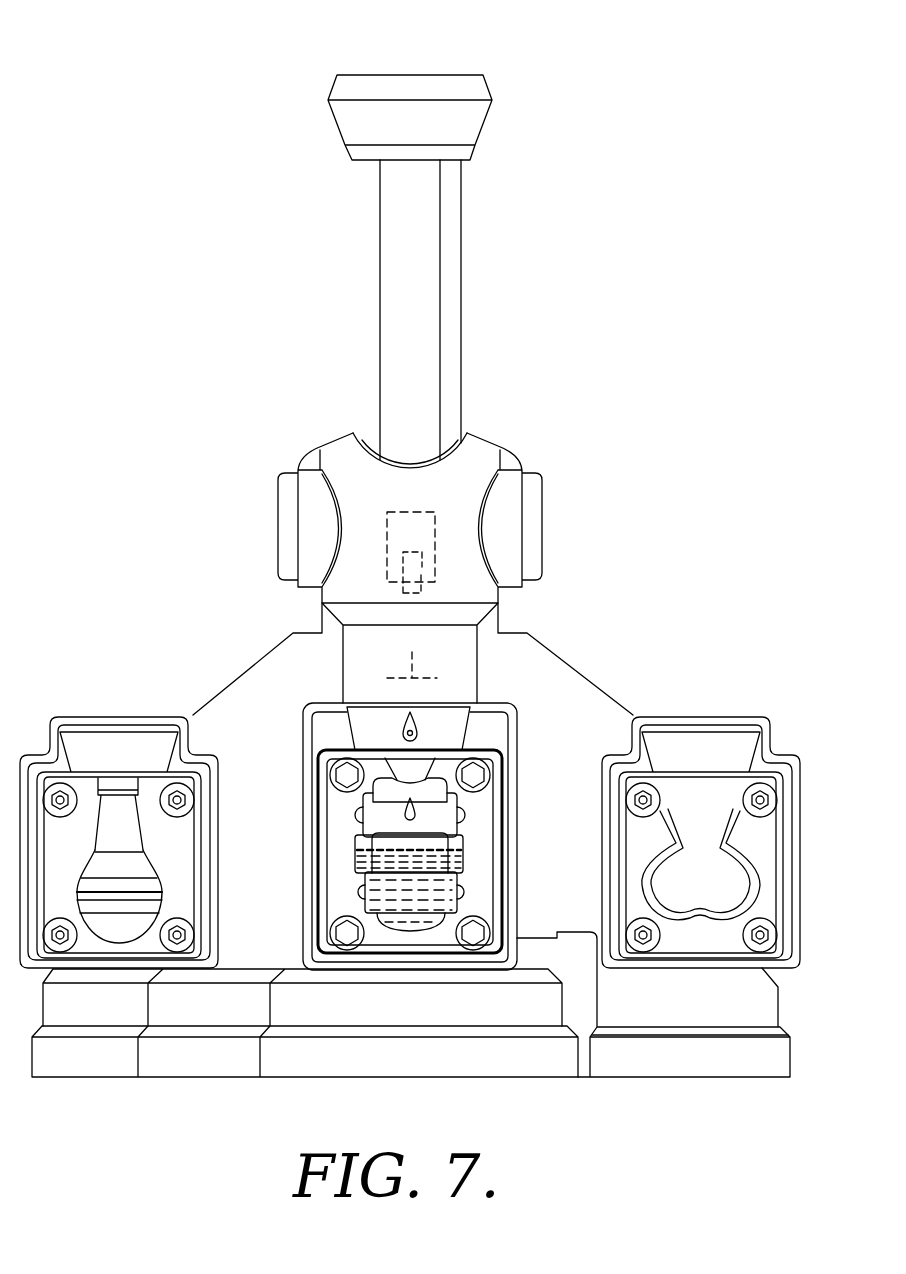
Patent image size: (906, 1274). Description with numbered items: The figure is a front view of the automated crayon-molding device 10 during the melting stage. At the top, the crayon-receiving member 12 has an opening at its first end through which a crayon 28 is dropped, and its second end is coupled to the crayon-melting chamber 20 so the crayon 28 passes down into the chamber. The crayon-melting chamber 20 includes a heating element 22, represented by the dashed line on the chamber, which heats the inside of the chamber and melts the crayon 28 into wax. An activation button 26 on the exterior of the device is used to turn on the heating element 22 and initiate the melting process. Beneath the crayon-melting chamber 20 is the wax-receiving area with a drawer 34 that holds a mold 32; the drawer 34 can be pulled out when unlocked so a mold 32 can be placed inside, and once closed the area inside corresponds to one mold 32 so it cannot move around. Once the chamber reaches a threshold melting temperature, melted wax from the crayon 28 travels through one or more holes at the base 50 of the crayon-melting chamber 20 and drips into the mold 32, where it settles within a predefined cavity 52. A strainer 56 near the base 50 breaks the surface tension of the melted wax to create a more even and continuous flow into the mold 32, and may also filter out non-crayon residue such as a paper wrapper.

The automated crayon-molding device 10 is at (221, 78).
The crayon-receiving member 12 is at (452, 240).
The crayon-melting chamber 20 is at (483, 452).
The heating element 22 is at (436, 529).
The activation button 26 is at (600, 945).
The crayon 28 is at (387, 582).
The mold 32 is at (380, 937).
The drawer 34 is at (320, 718).
The base 50 is at (443, 714).
The cavity 52 is at (433, 815).
The strainer 56 is at (422, 675).